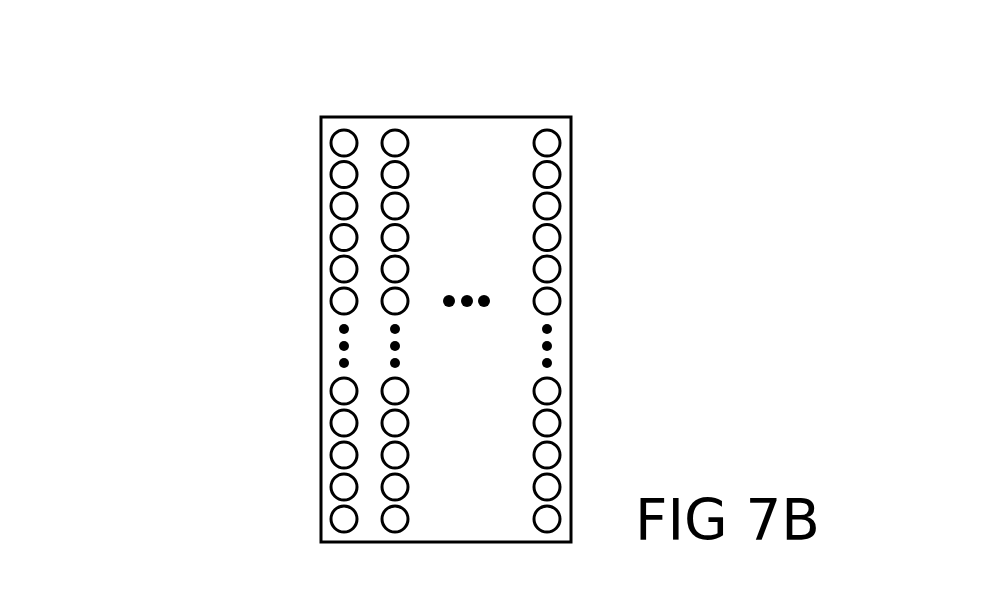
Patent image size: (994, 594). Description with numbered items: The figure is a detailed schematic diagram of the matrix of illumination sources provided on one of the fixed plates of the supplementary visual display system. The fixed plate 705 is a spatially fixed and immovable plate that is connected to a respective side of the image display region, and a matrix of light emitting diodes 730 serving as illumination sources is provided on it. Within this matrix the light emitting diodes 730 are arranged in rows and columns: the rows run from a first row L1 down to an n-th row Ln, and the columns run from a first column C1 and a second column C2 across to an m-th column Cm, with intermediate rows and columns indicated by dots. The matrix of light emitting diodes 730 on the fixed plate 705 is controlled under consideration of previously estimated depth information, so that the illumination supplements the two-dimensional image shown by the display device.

The fixed plate 705 is at (178, 66).
The light emitting diodes 730 is at (387, 210).
The first row L1 is at (300, 142).
The n-th row Ln is at (300, 519).
The first column C1 is at (342, 100).
The second column C2 is at (396, 100).
The m-th column Cm is at (548, 100).